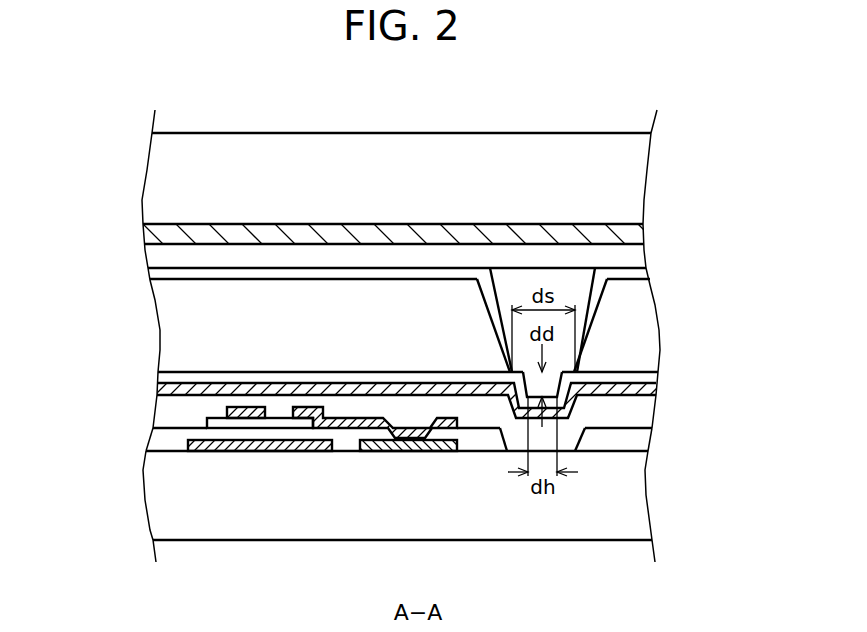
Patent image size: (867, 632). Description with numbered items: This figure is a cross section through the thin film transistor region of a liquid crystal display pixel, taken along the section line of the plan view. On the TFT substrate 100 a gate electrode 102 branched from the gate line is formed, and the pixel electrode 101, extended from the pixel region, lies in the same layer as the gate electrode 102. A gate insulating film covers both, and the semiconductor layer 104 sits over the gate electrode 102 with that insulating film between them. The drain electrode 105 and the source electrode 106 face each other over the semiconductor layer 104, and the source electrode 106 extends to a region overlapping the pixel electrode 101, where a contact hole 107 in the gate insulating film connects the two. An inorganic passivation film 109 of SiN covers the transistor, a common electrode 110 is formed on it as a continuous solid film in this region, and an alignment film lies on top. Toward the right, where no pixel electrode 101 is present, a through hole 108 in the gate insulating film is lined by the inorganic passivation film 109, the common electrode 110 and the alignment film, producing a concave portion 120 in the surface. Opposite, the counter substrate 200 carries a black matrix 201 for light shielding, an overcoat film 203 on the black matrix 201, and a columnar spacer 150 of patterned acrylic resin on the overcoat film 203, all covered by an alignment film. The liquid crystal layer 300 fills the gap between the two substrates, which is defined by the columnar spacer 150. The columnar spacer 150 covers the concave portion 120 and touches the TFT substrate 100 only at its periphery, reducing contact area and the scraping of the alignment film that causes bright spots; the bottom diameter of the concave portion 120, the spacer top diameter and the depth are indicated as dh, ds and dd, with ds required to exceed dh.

The TFT substrate 100 is at (635, 503).
The pixel electrode 101 is at (413, 445).
The gate electrode 102 is at (298, 442).
The semiconductor layer 104 is at (264, 423).
The drain electrode 105 is at (242, 411).
The source electrode 106 is at (346, 422).
The contact hole 107 is at (406, 412).
The through hole 108 is at (573, 438).
The inorganic passivation film 109 is at (635, 412).
The common electrode 110 is at (642, 388).
The concave portion 120 is at (532, 383).
The columnar spacer 150 is at (570, 282).
The counter substrate 200 is at (628, 175).
The black matrix 201 is at (643, 233).
The overcoat film 203 is at (630, 257).
The liquid crystal layer 300 is at (633, 328).